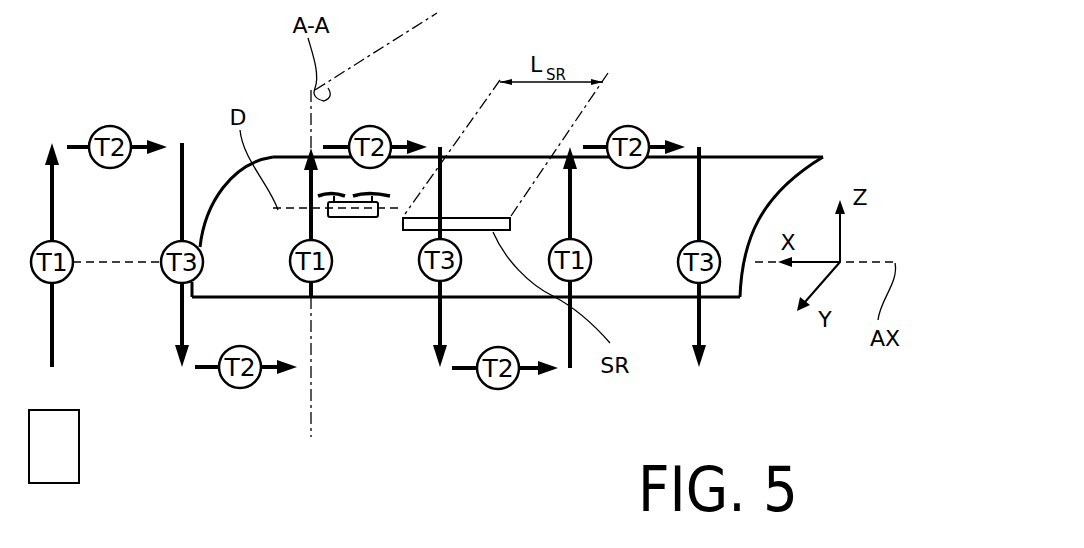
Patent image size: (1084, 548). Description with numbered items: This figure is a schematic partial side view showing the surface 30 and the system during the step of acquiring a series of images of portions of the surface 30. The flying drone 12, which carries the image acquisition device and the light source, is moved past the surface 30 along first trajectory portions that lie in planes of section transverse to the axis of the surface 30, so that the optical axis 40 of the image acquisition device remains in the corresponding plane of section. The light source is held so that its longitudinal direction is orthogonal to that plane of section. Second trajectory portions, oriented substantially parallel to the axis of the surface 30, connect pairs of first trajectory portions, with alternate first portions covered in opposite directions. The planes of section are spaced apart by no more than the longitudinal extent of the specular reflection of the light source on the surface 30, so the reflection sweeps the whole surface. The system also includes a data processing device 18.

The flying drone 12 is at (353, 240).
The data processing device 18 is at (65, 460).
The surface 30 is at (773, 170).
The optical axis 40 is at (427, 225).